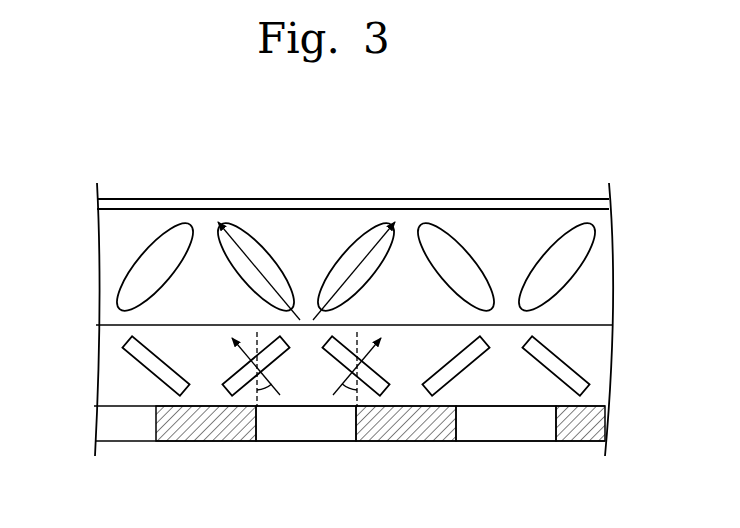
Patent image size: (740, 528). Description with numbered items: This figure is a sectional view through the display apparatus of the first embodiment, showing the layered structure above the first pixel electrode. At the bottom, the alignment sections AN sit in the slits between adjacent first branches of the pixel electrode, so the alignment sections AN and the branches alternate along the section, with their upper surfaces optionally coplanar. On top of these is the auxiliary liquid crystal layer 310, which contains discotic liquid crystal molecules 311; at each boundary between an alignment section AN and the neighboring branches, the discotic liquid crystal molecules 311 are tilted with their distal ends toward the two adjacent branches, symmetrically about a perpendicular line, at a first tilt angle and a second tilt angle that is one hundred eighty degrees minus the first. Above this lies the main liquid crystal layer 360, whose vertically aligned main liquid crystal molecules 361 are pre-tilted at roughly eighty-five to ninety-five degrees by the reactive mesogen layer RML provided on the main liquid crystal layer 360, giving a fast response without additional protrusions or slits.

The reactive mesogen layer RML is at (610, 203).
The main liquid crystal layer 360 is at (78, 212).
The main liquid crystal molecules 361 is at (570, 263).
The auxiliary liquid crystal layer 310 is at (78, 325).
The discotic liquid crystal molecules 311 is at (568, 373).
The alignment section AN is at (412, 430).